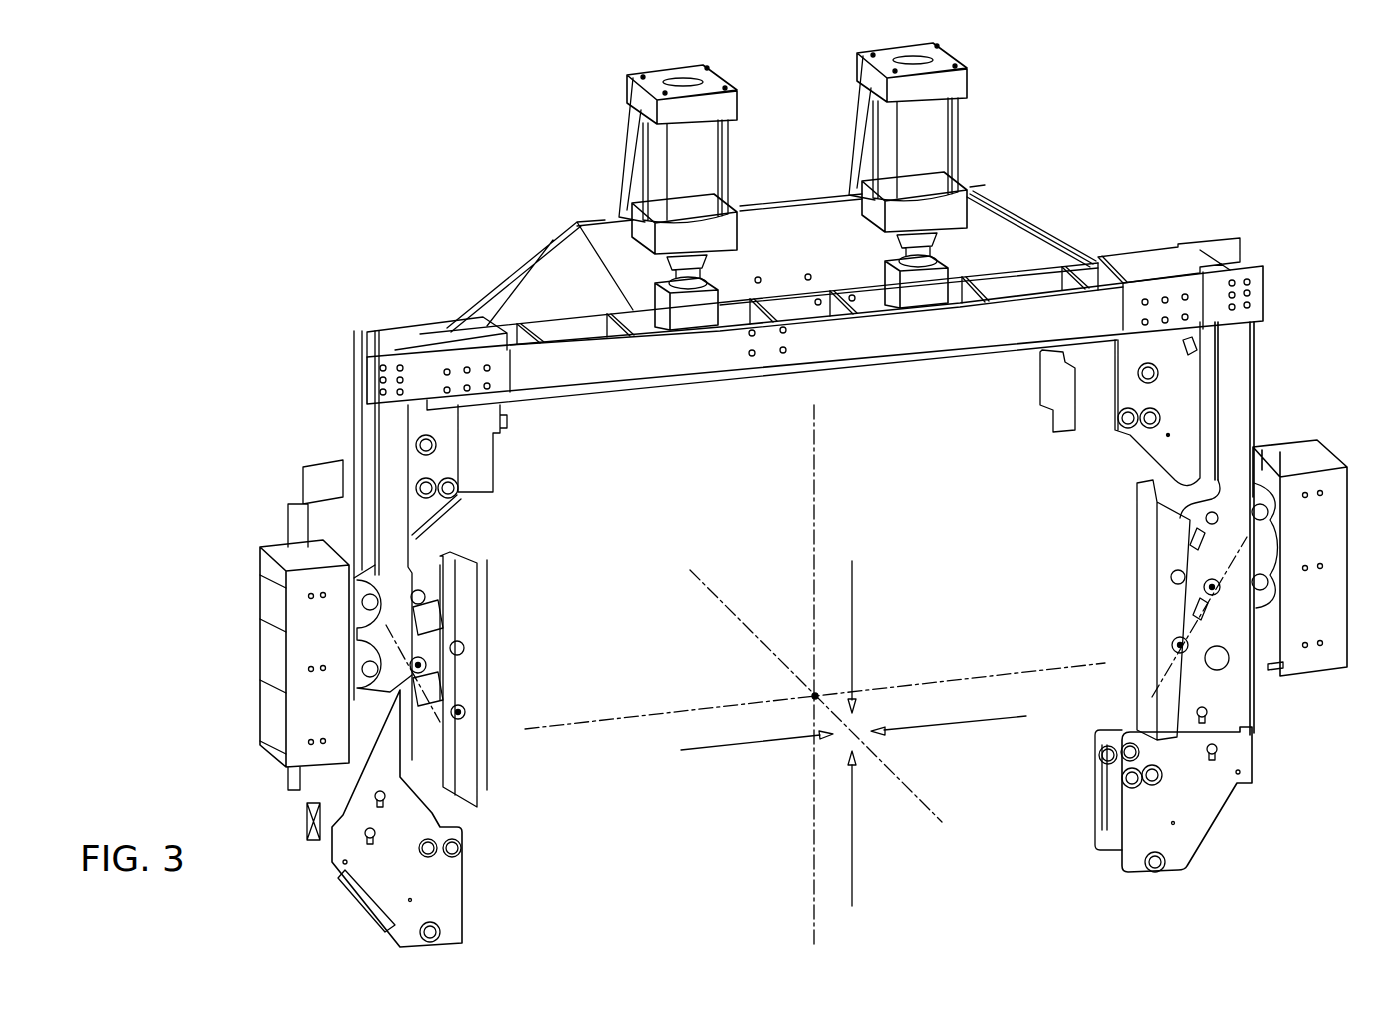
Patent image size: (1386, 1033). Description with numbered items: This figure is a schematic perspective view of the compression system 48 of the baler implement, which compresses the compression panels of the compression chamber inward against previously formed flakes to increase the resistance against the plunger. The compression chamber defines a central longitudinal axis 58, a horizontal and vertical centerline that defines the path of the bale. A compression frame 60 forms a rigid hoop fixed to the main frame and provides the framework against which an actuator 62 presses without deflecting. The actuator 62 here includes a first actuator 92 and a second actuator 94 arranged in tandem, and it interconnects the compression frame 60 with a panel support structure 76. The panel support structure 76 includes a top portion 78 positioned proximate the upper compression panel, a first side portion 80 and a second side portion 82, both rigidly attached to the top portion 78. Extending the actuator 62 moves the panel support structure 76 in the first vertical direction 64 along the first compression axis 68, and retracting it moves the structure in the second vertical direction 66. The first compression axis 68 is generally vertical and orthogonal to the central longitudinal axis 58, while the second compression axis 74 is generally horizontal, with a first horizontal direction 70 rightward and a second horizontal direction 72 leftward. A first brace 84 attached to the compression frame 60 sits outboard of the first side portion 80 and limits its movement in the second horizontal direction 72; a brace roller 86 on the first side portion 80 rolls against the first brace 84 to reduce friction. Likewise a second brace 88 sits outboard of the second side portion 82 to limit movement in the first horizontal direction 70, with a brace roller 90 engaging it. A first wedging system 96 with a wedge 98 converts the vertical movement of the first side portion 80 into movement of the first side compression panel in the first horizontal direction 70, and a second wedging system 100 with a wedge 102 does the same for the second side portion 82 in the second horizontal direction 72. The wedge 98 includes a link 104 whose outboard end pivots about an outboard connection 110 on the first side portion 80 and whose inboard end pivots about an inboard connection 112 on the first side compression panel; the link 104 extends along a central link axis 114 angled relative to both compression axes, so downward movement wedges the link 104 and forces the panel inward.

The compression system 48 is at (770, 488).
The central longitudinal axis 58 is at (690, 574).
The compression frame 60 is at (762, 210).
The actuator 62 is at (798, 179).
The first vertical direction 64 is at (853, 600).
The second vertical direction 66 is at (853, 878).
The first compression axis 68 is at (818, 487).
The first horizontal direction 70 is at (727, 751).
The second horizontal direction 72 is at (951, 722).
The second compression axis 74 is at (991, 675).
The panel support structure 76 is at (1133, 247).
The top portion 78 is at (1013, 267).
The first side portion 80 is at (393, 435).
The second side portion 82 is at (1235, 400).
The first brace 84 is at (327, 617).
The brace roller 86 is at (334, 543).
The second brace 88 is at (1317, 608).
The brace roller 90 is at (1268, 558).
The first actuator 92 is at (690, 155).
The second actuator 94 is at (930, 132).
The first wedging system 96 is at (413, 712).
The wedge 98 is at (440, 550).
The second wedging system 100 is at (1206, 619).
The wedge 102 is at (1184, 473).
The link 104 is at (440, 612).
The outboard connection 110 is at (424, 596).
The inboard connection 112 is at (426, 665).
The central link axis 114 is at (498, 748).